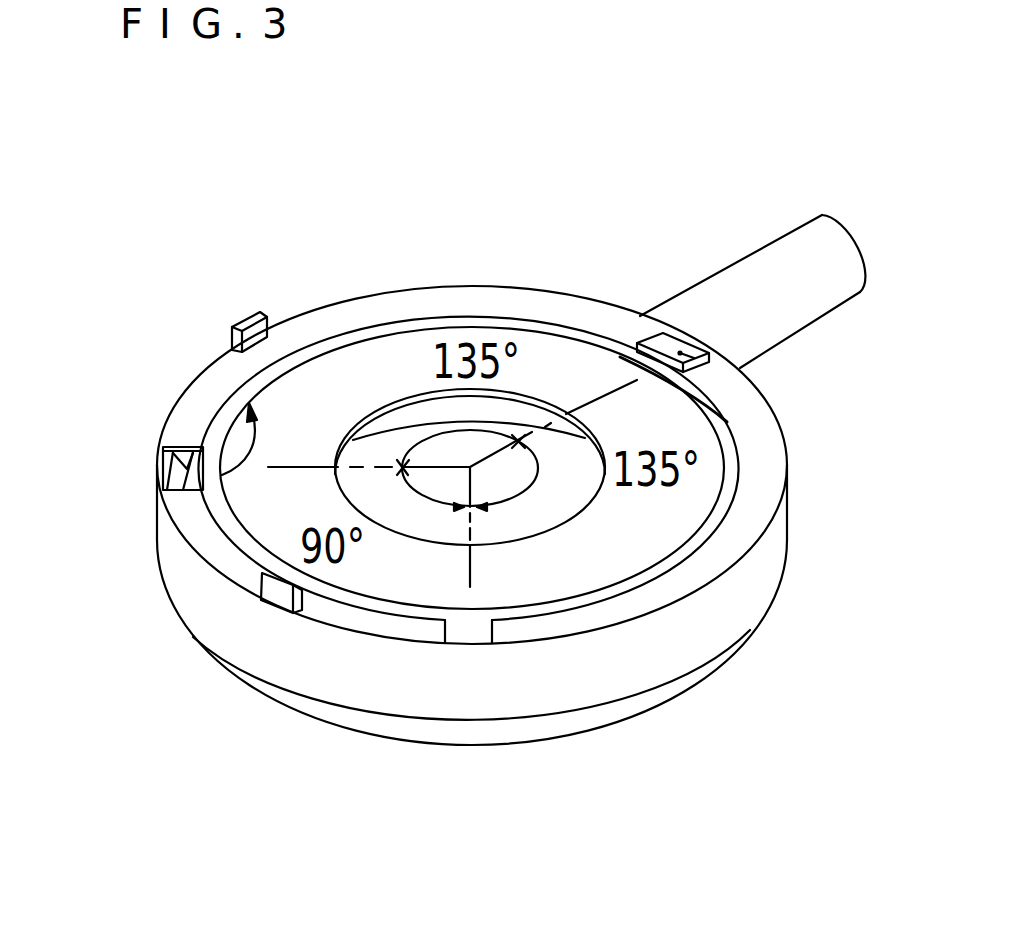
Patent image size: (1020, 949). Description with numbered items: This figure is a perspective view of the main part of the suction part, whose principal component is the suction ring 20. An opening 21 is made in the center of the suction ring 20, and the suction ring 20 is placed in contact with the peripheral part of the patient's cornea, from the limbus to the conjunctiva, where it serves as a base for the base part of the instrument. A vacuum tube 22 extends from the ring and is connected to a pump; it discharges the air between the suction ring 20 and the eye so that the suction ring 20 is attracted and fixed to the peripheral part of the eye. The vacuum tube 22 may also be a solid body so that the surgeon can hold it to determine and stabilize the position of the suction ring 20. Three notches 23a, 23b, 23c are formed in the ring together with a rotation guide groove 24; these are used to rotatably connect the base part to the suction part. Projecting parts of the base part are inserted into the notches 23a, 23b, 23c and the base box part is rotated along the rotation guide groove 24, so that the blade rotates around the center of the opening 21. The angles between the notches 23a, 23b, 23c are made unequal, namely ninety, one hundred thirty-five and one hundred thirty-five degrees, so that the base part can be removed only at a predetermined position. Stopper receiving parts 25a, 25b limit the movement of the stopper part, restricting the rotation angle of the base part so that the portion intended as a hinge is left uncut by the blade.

The suction ring 20 is at (523, 515).
The opening 21 is at (535, 593).
The vacuum tube 22 is at (767, 293).
The notch 23a is at (361, 713).
The notch 23b is at (172, 447).
The notch 23c is at (757, 392).
The rotation guide groove 24 is at (222, 475).
The stopper receiving part 25a is at (257, 333).
The stopper receiving part 25b is at (193, 640).